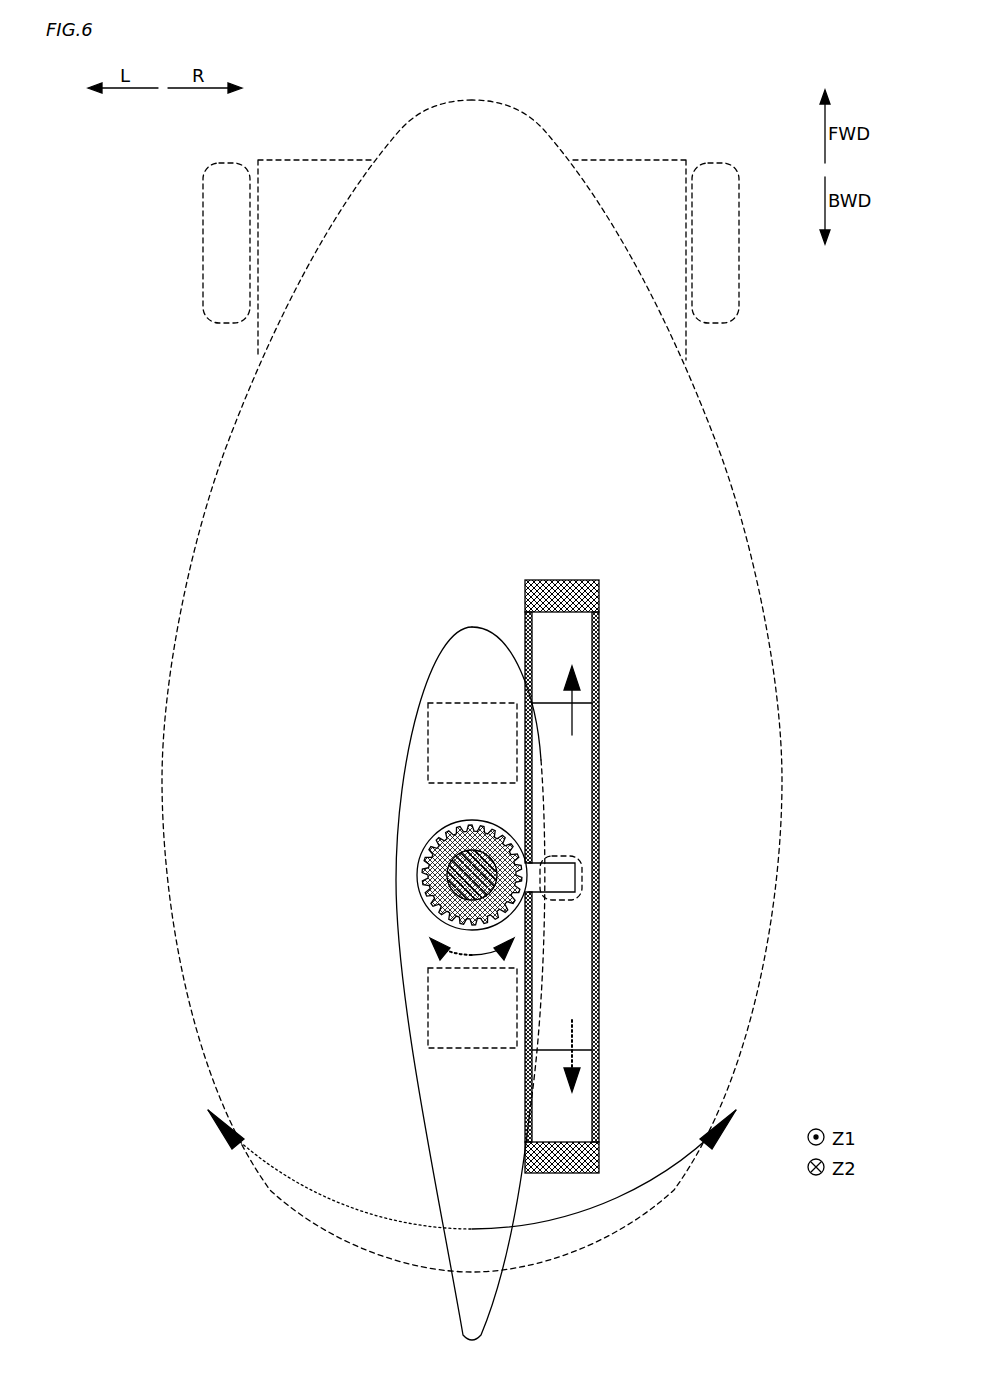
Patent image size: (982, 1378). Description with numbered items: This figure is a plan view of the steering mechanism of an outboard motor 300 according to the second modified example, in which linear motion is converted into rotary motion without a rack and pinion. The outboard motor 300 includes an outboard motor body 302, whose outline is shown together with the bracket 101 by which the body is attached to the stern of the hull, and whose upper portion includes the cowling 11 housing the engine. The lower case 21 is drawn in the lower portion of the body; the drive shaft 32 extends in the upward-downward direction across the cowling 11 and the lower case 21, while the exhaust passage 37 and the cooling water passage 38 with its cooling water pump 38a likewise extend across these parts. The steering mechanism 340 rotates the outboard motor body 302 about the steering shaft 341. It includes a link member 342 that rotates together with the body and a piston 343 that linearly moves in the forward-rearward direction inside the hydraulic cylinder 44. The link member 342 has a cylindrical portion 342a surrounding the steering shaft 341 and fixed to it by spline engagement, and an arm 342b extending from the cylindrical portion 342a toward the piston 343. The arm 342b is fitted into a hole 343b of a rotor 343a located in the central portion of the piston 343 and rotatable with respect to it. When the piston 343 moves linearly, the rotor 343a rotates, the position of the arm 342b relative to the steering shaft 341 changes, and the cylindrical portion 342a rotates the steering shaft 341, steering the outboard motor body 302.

The outboard motor 300 is at (451, 668).
The bracket 101 is at (451, 680).
The cowling 11 is at (451, 686).
The outboard motor body 302 is at (657, 110).
The lower case 21 is at (433, 672).
The cooling water passage 38 is at (435, 743).
The cooling water pump 38a is at (430, 762).
The link member 342 is at (498, 890).
The cylindrical portion 342a is at (502, 890).
The arm 342b is at (503, 890).
The drive shaft 32 is at (416, 891).
The steering shaft 341 is at (416, 891).
The piston 343 is at (600, 804).
The rotor 343a is at (600, 868).
The hole 343b is at (586, 851).
The steering mechanism 340 is at (638, 803).
The hydraulic cylinder 44 is at (619, 876).
The exhaust passage 37 is at (428, 1022).